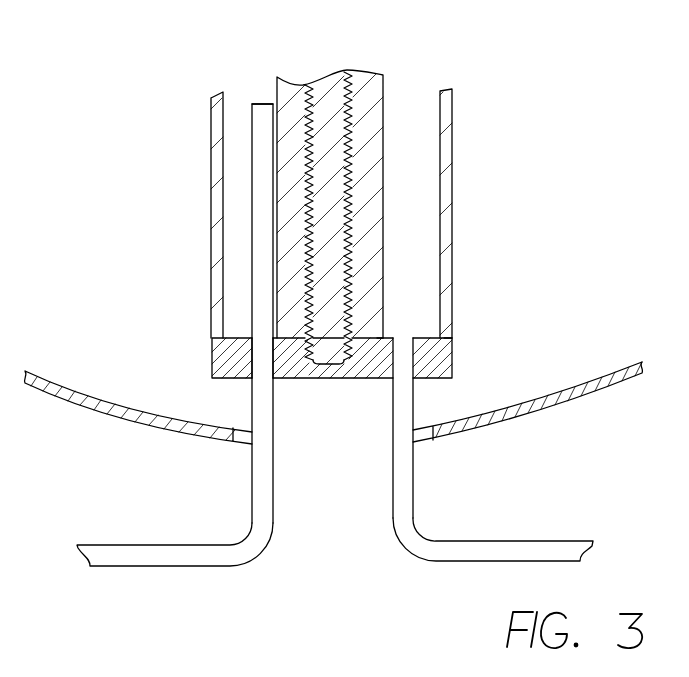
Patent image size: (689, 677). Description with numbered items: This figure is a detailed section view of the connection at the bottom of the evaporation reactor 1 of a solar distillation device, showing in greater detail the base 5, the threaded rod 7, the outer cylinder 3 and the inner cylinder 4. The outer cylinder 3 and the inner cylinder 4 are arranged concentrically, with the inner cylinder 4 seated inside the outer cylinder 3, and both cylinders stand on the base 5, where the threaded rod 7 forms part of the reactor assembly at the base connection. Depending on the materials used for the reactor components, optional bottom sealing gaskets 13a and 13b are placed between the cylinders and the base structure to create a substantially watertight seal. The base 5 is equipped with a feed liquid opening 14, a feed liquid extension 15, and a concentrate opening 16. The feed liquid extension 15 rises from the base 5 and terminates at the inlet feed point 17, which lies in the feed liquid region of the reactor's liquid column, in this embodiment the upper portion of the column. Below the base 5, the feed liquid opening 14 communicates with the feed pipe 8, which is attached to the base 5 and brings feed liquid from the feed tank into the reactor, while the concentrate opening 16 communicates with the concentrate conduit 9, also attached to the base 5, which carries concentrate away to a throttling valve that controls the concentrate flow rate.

The evaporation reactor 1 is at (92, 114).
The outer cylinder 3 is at (451, 177).
The inner cylinder 4 is at (384, 118).
The base 5 is at (453, 358).
The threaded rod 7 is at (330, 249).
The feed pipe 8 is at (263, 522).
The concentrate conduit 9 is at (403, 520).
The bottom sealing gasket 13a is at (385, 337).
The bottom sealing gasket 13b is at (453, 337).
The feed liquid opening 14 is at (265, 359).
The feed liquid extension 15 is at (261, 162).
The concentrate opening 16 is at (403, 363).
The inlet feed point 17 is at (261, 103).